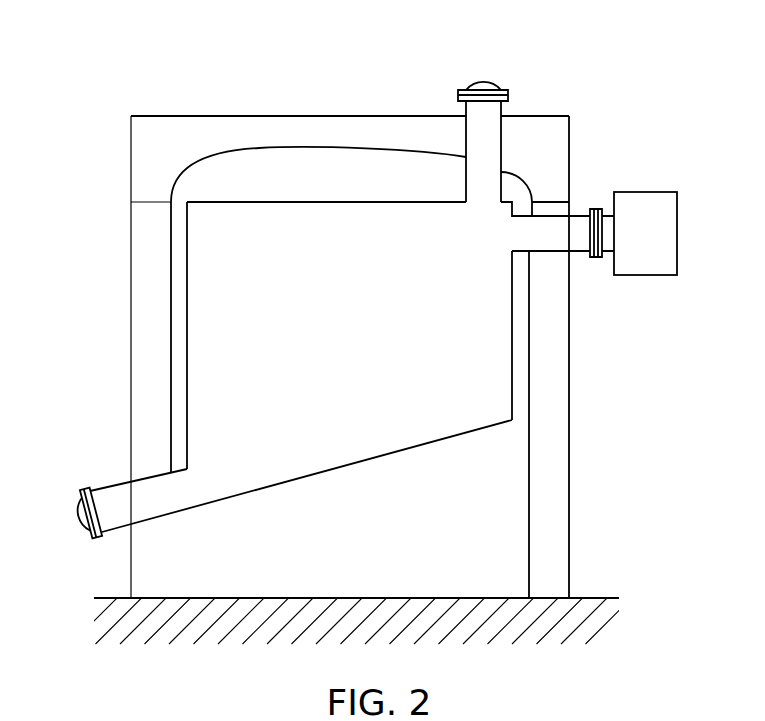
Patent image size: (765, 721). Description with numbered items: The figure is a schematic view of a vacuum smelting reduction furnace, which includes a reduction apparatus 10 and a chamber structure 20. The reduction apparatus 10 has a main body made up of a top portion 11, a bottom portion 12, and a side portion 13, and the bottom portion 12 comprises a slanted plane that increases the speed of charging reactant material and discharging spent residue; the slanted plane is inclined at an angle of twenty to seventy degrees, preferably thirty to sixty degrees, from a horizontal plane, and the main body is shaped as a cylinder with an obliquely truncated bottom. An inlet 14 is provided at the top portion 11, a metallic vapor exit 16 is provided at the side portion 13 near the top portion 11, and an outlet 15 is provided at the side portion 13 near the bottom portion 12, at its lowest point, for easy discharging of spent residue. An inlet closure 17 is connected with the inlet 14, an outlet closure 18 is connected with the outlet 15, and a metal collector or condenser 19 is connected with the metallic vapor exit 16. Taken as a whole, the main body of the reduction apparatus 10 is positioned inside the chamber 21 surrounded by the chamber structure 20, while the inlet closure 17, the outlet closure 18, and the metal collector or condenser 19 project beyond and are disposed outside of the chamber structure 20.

The reduction apparatus 10 is at (331, 347).
The top portion 11 is at (327, 203).
The bottom portion 12 is at (323, 472).
The side portion 13 is at (188, 335).
The inlet 14 is at (501, 150).
The outlet 15 is at (143, 482).
The metallic vapor exit 16 is at (550, 252).
The inlet closure 17 is at (482, 83).
The outlet closure 18 is at (80, 508).
The metal collector or condenser 19 is at (663, 238).
The chamber structure 20 is at (150, 251).
The chamber 21 is at (497, 507).